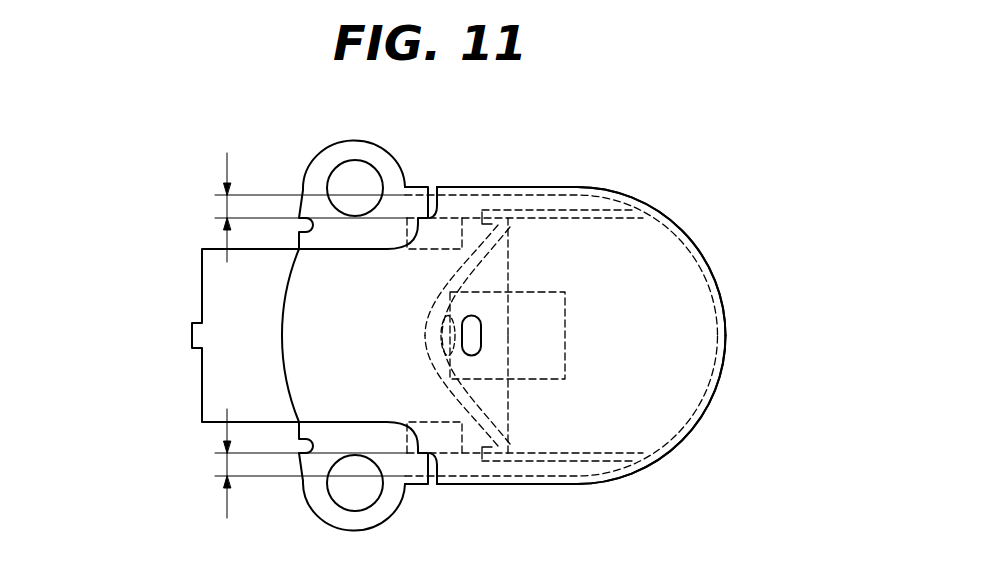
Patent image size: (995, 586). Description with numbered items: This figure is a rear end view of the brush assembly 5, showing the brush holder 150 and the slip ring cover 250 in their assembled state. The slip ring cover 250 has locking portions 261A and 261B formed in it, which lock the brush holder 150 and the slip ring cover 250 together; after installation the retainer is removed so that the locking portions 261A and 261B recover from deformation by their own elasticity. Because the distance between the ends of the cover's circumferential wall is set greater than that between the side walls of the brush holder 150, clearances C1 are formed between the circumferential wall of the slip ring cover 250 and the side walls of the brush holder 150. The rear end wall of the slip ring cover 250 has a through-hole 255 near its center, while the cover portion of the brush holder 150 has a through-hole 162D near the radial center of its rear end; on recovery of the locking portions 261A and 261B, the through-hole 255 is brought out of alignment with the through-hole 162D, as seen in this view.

The brush assembly 5 is at (644, 164).
The brush holder 150 is at (213, 254).
The through-hole 162D is at (445, 334).
The slip ring cover 250 is at (690, 278).
The through-hole 255 is at (476, 338).
The locking portion 261A is at (552, 455).
The locking portion 261B is at (552, 216).
The clearance C1 is at (295, 335).